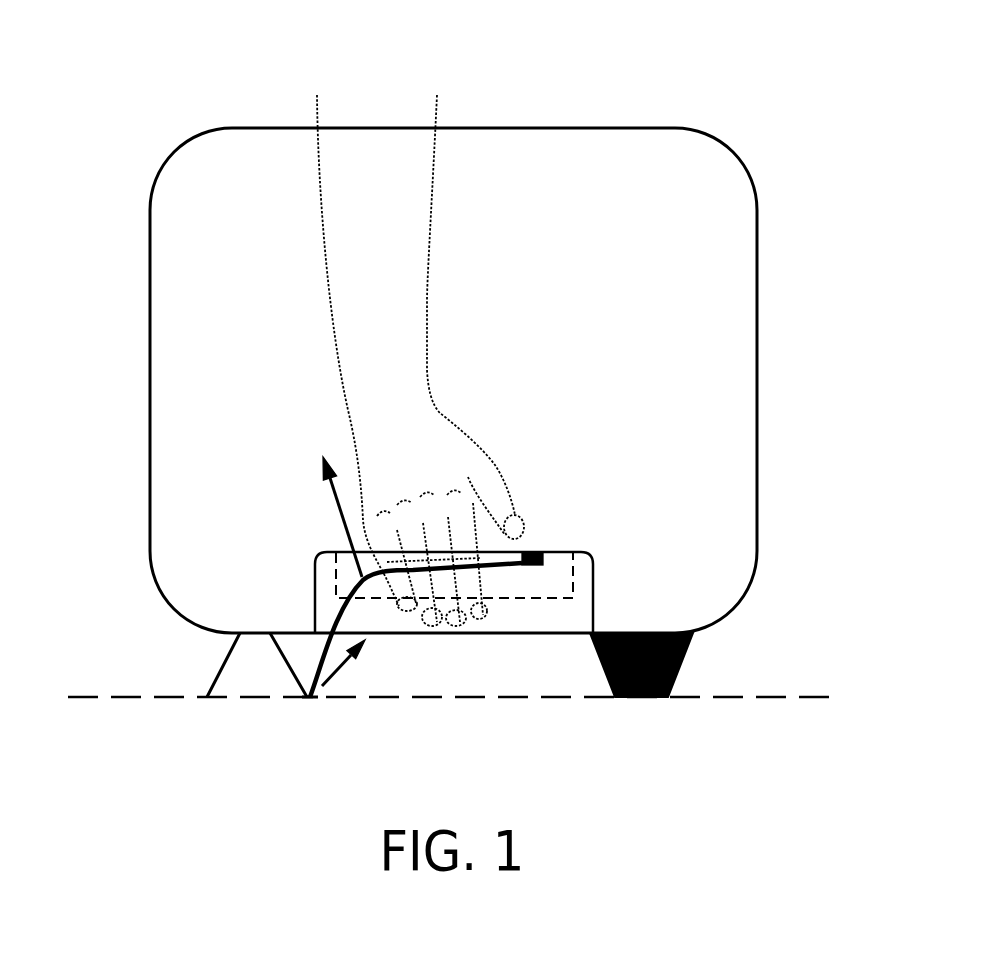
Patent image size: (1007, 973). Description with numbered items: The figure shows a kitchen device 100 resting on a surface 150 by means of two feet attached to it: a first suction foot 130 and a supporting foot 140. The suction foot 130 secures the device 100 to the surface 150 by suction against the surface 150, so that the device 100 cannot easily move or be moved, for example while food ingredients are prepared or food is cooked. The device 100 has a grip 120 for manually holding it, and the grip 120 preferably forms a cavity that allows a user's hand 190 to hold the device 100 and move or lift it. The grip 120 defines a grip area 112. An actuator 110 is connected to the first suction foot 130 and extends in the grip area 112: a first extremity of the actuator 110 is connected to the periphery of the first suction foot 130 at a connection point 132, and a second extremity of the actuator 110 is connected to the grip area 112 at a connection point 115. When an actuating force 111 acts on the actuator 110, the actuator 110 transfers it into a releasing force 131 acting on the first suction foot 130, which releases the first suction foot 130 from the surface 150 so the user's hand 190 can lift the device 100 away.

The kitchen device 100 is at (757, 229).
The actuator 110 is at (345, 596).
The actuating force 111 is at (337, 500).
The grip area 112 is at (573, 575).
The connection point 115 is at (535, 550).
The grip 120 is at (593, 612).
The first suction foot 130 is at (252, 688).
The releasing force 131 is at (347, 676).
The connection point 132 is at (310, 699).
The supporting foot 140 is at (643, 700).
The surface 150 is at (84, 700).
The user's hand 190 is at (427, 370).